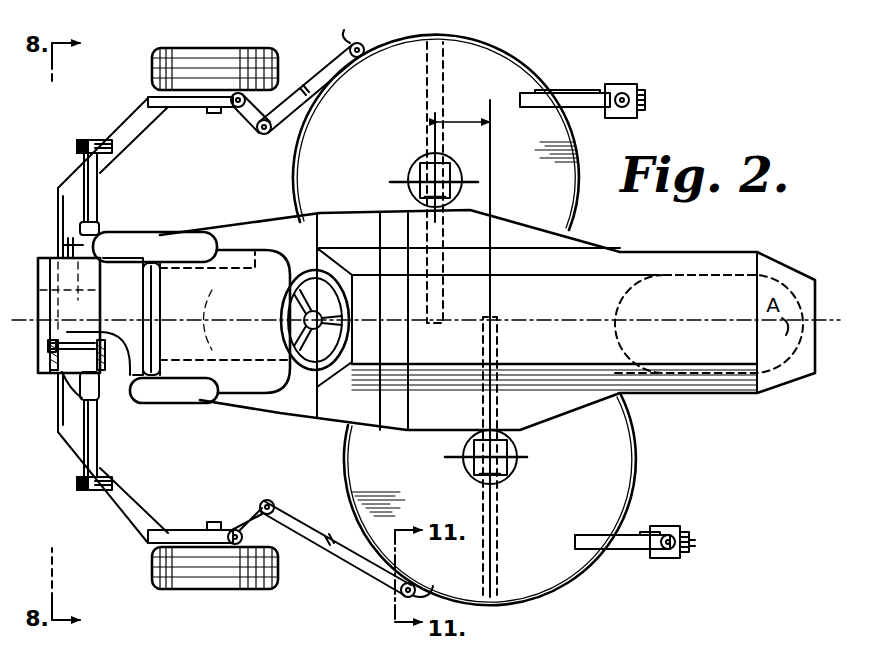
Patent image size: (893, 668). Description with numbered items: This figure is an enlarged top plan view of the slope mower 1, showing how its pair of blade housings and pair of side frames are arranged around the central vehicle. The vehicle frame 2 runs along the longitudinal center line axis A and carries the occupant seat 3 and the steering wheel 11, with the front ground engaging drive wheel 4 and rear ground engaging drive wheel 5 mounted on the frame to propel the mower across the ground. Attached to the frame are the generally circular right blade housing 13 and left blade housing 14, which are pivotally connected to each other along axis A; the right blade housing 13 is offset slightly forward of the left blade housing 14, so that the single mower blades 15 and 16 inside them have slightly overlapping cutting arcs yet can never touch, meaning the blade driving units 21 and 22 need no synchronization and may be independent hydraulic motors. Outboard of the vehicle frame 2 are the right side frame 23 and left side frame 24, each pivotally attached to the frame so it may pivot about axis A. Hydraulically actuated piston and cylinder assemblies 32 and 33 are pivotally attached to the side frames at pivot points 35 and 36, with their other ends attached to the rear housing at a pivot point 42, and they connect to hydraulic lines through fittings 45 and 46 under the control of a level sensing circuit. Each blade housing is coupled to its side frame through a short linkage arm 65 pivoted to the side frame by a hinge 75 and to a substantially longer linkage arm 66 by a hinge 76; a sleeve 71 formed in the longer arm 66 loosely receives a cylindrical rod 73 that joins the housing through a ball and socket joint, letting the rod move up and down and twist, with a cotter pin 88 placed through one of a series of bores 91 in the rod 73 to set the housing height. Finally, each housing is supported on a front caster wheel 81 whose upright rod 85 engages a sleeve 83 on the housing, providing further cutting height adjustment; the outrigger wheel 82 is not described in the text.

The slope mower 1 is at (627, 234).
The vehicle frame 2 is at (718, 253).
The occupant seat 3 is at (160, 232).
The front ground engaging drive wheel 4 is at (616, 340).
The rear ground engaging drive wheel 5 is at (262, 370).
The steering wheel 11 is at (284, 324).
The right blade housing 13 is at (490, 500).
The left blade housing 14 is at (436, 132).
The mower blade 15 is at (497, 566).
The mower blade 16 is at (427, 74).
The blade driving unit 21 is at (466, 466).
The blade driving unit 22 is at (412, 176).
The right side frame 23 is at (130, 506).
The left side frame 24 is at (146, 124).
The hydraulically actuated piston and cylinder assembly 32 is at (98, 400).
The hydraulically actuated piston and cylinder assembly 33 is at (63, 245).
The pivot point 35 is at (82, 489).
The pivot point 36 is at (88, 140).
The pivot point 42 is at (40, 291).
The fitting 45 is at (62, 398).
The fitting 46 is at (58, 223).
The short linkage arm 65 is at (256, 114).
The longer linkage arm 66 is at (320, 75).
The sleeve 71 is at (362, 47).
The cylindrical rod 73 is at (353, 44).
The hinge 75 is at (238, 108).
The hinge 76 is at (266, 135).
The front caster wheel 81 is at (648, 95).
The outrigger wheel 82 is at (273, 52).
The sleeve 83 is at (675, 527).
The upright rod 85 is at (627, 90).
The cotter pin 88 is at (692, 546).
The bores 91 is at (255, 255).